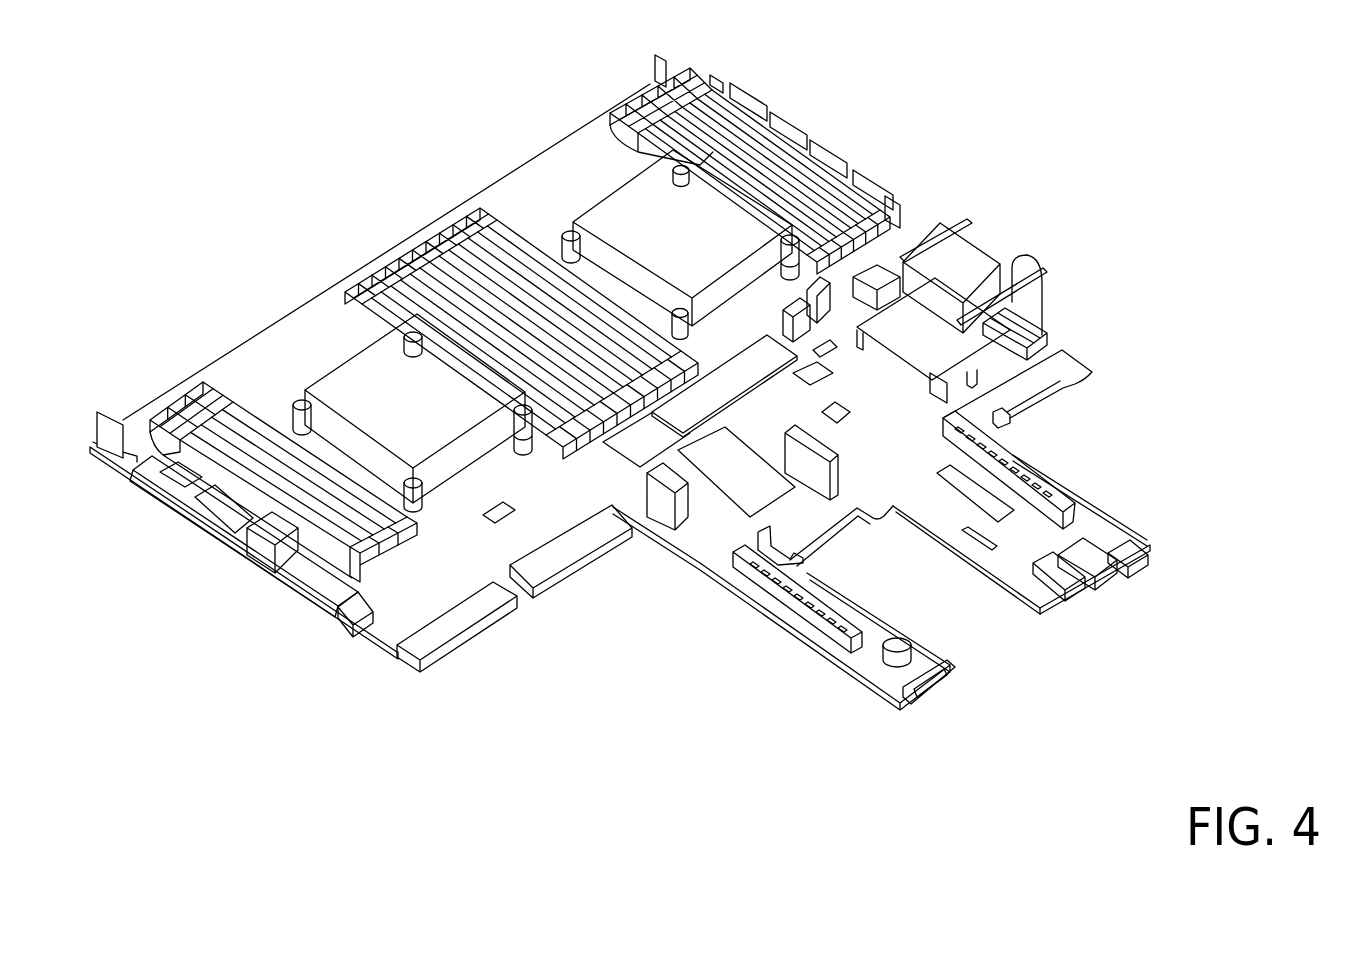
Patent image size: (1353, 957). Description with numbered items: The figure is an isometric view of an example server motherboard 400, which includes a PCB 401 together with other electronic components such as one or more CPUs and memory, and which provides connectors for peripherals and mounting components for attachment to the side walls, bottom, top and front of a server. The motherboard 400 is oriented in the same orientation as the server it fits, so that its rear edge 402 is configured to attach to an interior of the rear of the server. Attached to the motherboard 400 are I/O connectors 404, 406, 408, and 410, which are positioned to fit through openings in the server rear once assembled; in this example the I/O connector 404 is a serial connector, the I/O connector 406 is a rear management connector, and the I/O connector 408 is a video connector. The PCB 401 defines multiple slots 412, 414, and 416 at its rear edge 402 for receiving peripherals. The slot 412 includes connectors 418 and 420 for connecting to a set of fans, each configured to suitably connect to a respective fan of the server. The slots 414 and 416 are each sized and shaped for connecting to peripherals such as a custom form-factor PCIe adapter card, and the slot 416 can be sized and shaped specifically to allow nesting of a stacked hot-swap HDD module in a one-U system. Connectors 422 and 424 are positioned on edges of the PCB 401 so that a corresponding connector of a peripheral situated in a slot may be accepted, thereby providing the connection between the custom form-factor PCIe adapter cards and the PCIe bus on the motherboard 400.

The server motherboard 400 is at (242, 179).
The PCB 401 is at (262, 332).
The rear edge 402 is at (1060, 610).
The I/O connector 404 is at (935, 690).
The I/O connector 406 is at (1077, 588).
The I/O connector 408 is at (1107, 580).
The I/O connector 410 is at (1140, 563).
The slot 412 is at (631, 678).
The slot 414 is at (968, 622).
The slot 416 is at (1192, 478).
The connector 418 is at (460, 643).
The connector 420 is at (583, 568).
The connector 422 is at (833, 527).
The connector 424 is at (1033, 398).